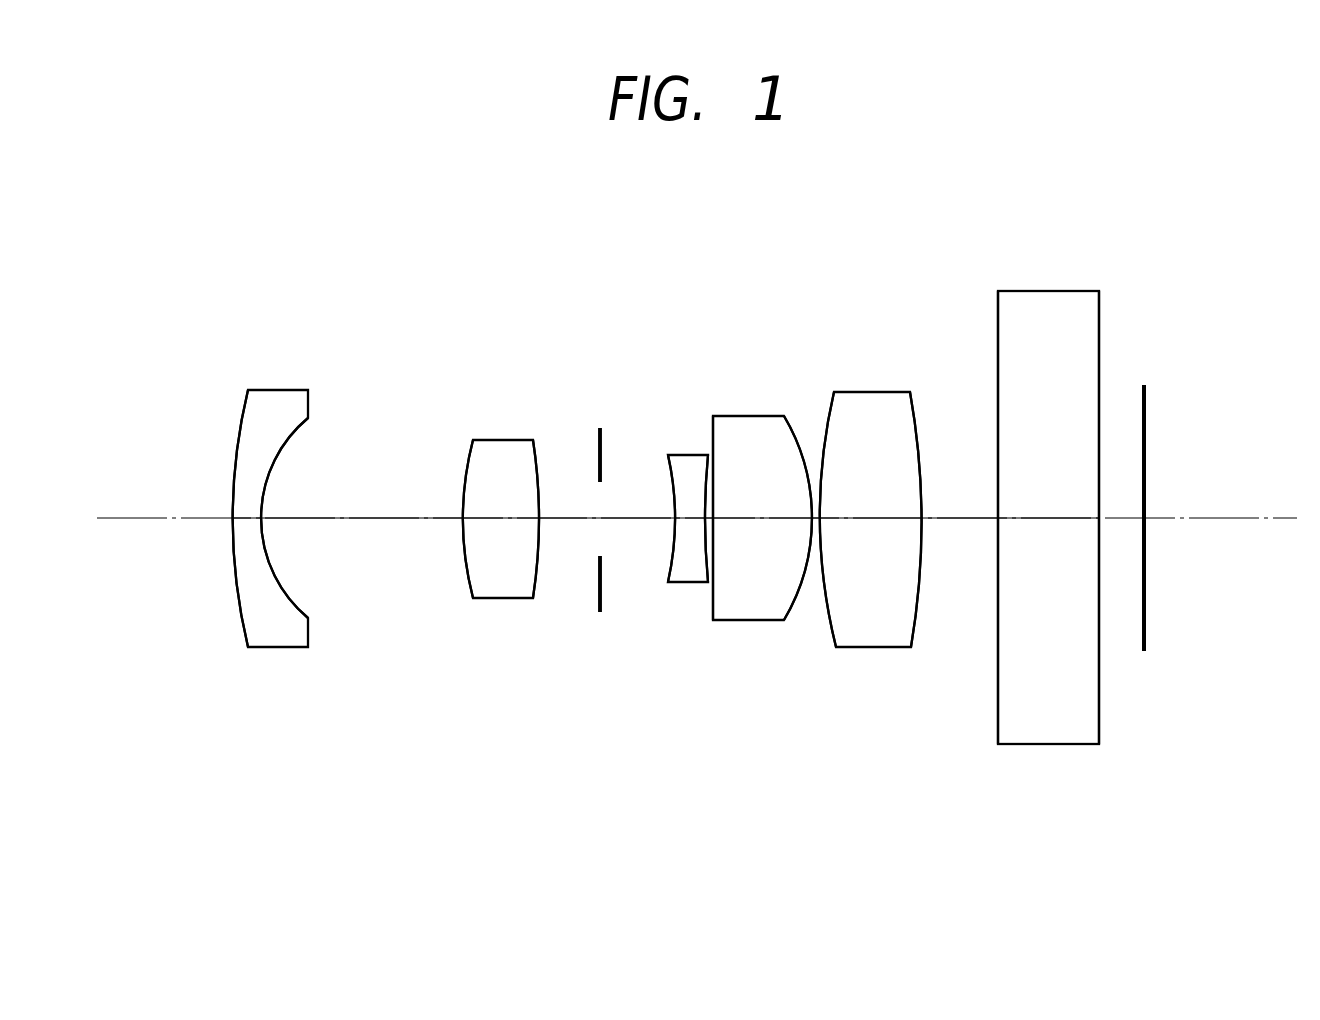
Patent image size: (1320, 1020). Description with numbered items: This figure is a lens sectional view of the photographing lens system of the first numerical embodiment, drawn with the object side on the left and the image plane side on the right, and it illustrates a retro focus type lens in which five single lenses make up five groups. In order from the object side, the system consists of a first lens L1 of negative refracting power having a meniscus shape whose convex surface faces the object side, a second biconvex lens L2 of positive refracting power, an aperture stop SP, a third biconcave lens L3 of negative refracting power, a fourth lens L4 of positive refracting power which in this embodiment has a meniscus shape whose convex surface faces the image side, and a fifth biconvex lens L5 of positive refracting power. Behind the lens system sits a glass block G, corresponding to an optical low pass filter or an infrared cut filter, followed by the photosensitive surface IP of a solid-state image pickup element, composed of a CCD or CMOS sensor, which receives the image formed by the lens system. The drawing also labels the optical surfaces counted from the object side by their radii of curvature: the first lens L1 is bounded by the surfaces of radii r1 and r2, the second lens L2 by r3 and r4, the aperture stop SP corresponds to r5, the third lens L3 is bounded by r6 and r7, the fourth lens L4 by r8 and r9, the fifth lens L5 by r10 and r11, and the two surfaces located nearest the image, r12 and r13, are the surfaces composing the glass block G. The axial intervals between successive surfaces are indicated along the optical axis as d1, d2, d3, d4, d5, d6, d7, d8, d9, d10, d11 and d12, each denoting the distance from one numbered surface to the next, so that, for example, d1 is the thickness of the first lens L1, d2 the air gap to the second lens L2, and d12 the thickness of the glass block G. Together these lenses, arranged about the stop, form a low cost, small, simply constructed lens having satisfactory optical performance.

The first lens L1 is at (277, 390).
The second biconvex lens L2 is at (503, 440).
The third biconcave lens L3 is at (685, 455).
The fourth lens L4 is at (758, 416).
The fifth biconvex lens L5 is at (882, 392).
The aperture stop SP is at (600, 436).
The glass block G is at (1049, 291).
The photosensitive surface IP is at (1146, 400).
The radius of curvature of the first surface r1 is at (242, 415).
The radius of curvature of the second surface r2 is at (310, 405).
The radius of curvature of the third surface r3 is at (467, 450).
The radius of curvature of the fourth surface r4 is at (545, 450).
The radius of curvature of the fifth surface r5 is at (595, 432).
The radius of curvature of the sixth surface r6 is at (668, 470).
The radius of curvature of the seventh surface r7 is at (704, 470).
The radius of curvature of the eighth surface r8 is at (722, 440).
The radius of curvature of the ninth surface r9 is at (809, 440).
The radius of curvature of the tenth surface r10 is at (832, 415).
The radius of curvature of the eleventh surface r11 is at (918, 417).
The radius of curvature of the twelfth surface r12 is at (998, 310).
The radius of curvature of the thirteenth surface r13 is at (1101, 308).
The interval between the first and second surfaces d1 is at (252, 520).
The interval between the second and third surfaces d2 is at (383, 520).
The interval between the third and fourth surfaces d3 is at (502, 520).
The interval between the fourth and fifth surfaces d4 is at (570, 520).
The interval between the fifth and sixth surfaces d5 is at (637, 520).
The interval between the sixth and seventh surfaces d6 is at (688, 520).
The interval between the seventh and eighth surfaces d7 is at (708, 520).
The interval between the eighth and ninth surfaces d8 is at (770, 520).
The interval between the ninth and tenth surfaces d9 is at (815, 520).
The interval between the tenth and eleventh surfaces d10 is at (873, 520).
The interval between the eleventh and twelfth surfaces d11 is at (958, 520).
The interval between the twelfth and thirteenth surfaces d12 is at (1053, 520).